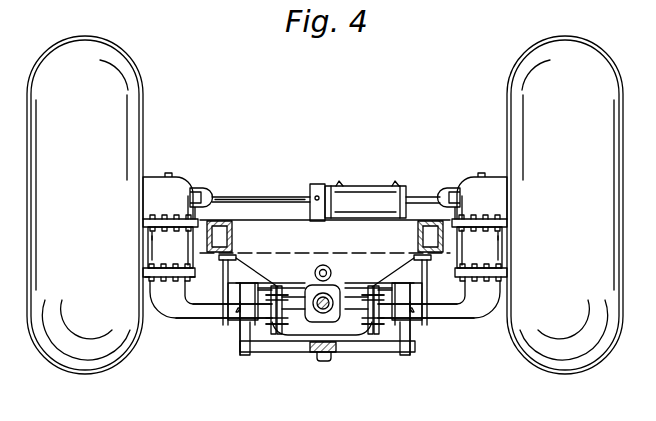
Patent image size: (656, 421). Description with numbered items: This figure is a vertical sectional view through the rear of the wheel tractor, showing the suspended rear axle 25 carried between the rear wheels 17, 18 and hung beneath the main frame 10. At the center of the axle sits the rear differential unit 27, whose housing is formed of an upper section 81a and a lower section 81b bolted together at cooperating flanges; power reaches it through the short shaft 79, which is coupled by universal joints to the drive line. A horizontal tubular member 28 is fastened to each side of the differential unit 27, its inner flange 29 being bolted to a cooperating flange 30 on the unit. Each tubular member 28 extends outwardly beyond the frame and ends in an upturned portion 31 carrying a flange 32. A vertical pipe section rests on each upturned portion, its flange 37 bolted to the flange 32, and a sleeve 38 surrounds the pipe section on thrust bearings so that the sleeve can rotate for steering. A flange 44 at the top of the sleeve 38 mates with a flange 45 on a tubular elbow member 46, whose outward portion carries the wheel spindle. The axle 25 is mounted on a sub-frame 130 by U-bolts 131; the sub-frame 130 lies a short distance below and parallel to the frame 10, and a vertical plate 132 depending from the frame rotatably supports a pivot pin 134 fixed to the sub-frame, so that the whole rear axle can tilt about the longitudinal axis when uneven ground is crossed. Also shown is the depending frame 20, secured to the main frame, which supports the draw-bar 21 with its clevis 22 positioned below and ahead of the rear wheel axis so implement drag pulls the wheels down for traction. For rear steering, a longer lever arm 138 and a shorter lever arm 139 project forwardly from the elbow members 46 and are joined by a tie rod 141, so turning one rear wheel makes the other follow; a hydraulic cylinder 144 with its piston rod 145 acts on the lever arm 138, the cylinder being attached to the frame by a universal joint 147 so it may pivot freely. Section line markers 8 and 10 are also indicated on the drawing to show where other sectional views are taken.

The section line 8 is at (325, 304).
The frame 10 is at (232, 241).
The rear wheel 17 is at (562, 131).
The rear wheel 18 is at (95, 131).
The depending frame 20 is at (416, 355).
The draw-bar 21 is at (322, 352).
The clevis 22 is at (319, 354).
The rear axle 25 is at (157, 326).
The rear differential unit 27 is at (298, 324).
The horizontal tubular member 28 is at (192, 312).
The flange 29 is at (272, 322).
The cooperating flange 30 is at (273, 330).
The upturned portion 31 is at (155, 292).
The flange 32 is at (150, 280).
The flange 37 is at (145, 272).
The sleeve 38 is at (177, 255).
The flange 44 is at (148, 236).
The flange 45 is at (143, 221).
The tubular elbow member 46 is at (172, 205).
The short shaft 79 is at (328, 300).
The upper section 81a is at (313, 276).
The lower section 81b is at (345, 322).
The sub-frame 130 is at (240, 273).
The U-bolt 131 is at (232, 326).
The vertical plate 132 is at (367, 249).
The pivot pin 134 is at (322, 265).
The lever arm 138 is at (452, 196).
The lever arm 139 is at (202, 195).
The tie rod 141 is at (275, 197).
The hydraulic cylinder 144 is at (378, 188).
The piston rod 145 is at (430, 201).
The universal joint 147 is at (315, 186).